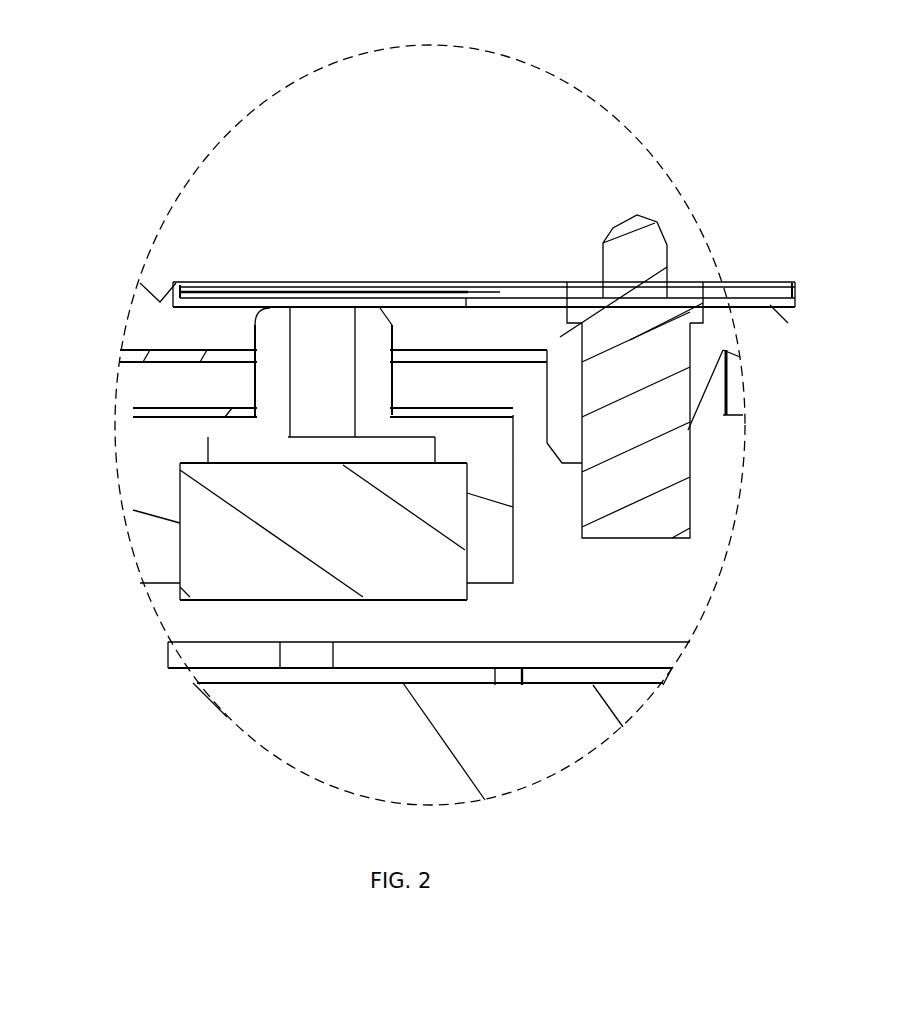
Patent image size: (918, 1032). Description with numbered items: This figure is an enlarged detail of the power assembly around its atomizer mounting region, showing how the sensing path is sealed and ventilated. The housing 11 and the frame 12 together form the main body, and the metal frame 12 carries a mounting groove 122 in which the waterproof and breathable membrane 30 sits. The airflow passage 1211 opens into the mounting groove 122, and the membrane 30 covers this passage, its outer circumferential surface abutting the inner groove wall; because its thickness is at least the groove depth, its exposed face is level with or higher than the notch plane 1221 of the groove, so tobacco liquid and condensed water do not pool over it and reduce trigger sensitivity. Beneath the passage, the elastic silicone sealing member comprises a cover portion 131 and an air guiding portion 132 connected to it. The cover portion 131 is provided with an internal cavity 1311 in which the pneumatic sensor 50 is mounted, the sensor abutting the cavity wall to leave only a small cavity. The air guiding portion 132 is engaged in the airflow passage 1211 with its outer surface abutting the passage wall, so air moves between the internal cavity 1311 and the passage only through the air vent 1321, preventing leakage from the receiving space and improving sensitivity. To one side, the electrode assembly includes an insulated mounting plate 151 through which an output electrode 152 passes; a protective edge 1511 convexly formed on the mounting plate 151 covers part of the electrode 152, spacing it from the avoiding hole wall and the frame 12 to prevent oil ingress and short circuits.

The waterproof and breathable membrane 30 is at (432, 281).
The mounting groove 122 is at (468, 290).
The notch plane 1221 is at (488, 290).
The air guiding portion 132 is at (270, 320).
The air vent 1321 is at (337, 355).
The airflow passage 1211 is at (323, 316).
The internal cavity 1311 is at (248, 438).
The cover portion 131 is at (178, 445).
The mounting plate 151 is at (512, 330).
The protective edge 1511 is at (563, 397).
The output electrode 152 is at (613, 420).
The pneumatic sensor 50 is at (263, 572).
The housing 11 is at (803, 306).
The frame 12 is at (786, 322).